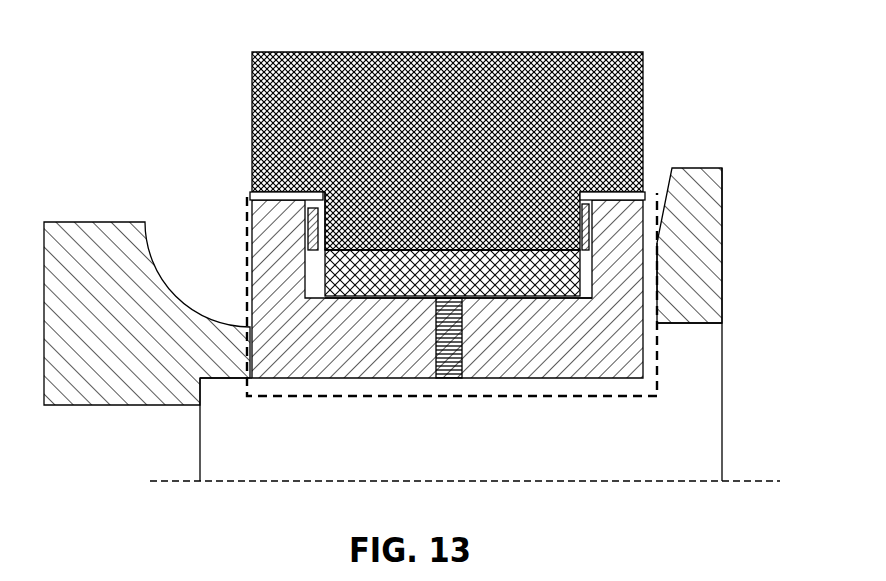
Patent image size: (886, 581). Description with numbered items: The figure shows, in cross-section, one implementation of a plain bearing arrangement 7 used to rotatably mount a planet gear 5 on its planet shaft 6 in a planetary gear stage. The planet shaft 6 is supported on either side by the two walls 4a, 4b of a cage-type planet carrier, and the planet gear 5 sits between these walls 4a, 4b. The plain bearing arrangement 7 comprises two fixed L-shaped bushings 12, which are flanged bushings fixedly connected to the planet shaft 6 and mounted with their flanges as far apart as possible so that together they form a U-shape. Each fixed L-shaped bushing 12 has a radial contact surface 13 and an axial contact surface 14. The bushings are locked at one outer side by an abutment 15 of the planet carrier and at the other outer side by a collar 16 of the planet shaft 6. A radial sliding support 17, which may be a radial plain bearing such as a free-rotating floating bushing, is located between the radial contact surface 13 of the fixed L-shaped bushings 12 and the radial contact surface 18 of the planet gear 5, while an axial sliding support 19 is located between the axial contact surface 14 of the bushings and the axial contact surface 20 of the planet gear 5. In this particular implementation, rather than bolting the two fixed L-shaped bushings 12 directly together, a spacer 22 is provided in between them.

The wall 4a is at (115, 243).
The wall 4b is at (698, 196).
The planet gear 5 is at (578, 54).
The planet shaft 6 is at (690, 444).
The plain bearing arrangement 7 is at (666, 268).
The fixed L-shaped bushing 12 is at (252, 259).
The radial contact surface 13 is at (487, 307).
The axial contact surface 14 is at (298, 234).
The abutment 15 is at (227, 323).
The collar 16 is at (684, 348).
The radial sliding support 17 is at (546, 276).
The radial contact surface 18 is at (495, 245).
The axial sliding support 19 is at (255, 194).
The axial contact surface 20 is at (411, 225).
The spacer 22 is at (438, 380).